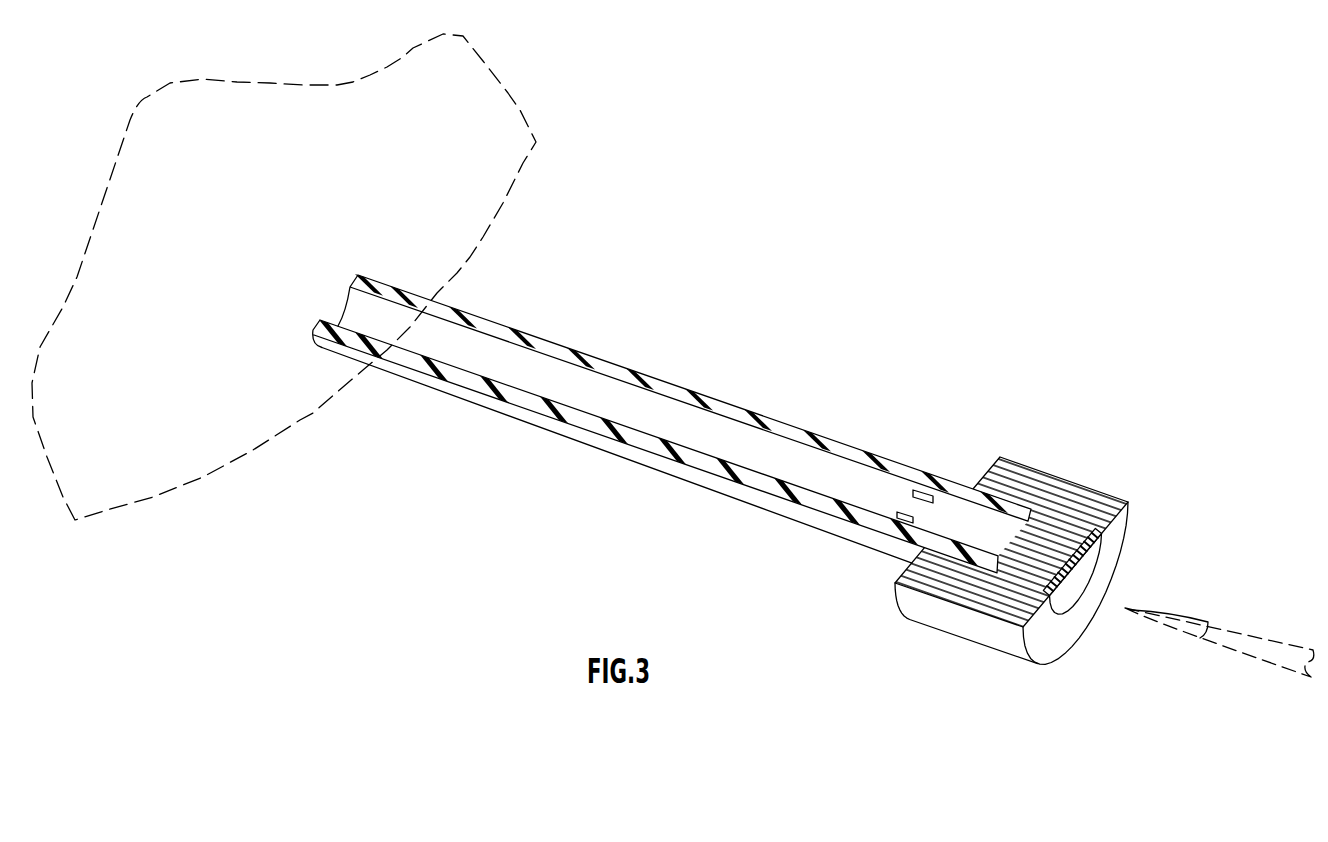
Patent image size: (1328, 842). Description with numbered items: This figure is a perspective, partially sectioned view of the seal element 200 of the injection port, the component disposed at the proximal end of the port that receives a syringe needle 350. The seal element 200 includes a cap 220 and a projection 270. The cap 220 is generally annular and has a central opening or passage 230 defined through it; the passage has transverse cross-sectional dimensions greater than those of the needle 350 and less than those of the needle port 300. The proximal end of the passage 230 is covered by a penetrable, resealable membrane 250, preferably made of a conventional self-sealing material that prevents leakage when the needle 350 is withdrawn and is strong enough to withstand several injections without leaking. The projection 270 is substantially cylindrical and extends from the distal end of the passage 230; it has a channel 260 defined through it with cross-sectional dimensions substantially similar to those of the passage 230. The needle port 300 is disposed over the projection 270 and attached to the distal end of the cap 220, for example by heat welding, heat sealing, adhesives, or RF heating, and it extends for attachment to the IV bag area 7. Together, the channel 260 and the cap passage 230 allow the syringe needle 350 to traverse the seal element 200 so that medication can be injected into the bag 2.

The IV bag area 7 is at (518, 108).
The bag 2 is at (592, 180).
The needle port 300 is at (549, 380).
The seal element 200 is at (1127, 422).
The cap 220 is at (976, 641).
The central opening or passage 230 is at (1095, 618).
The penetrable, resealable membrane 250 is at (1083, 570).
The channel 260 is at (910, 508).
The projection 270 is at (915, 495).
The syringe needle 350 is at (1260, 664).